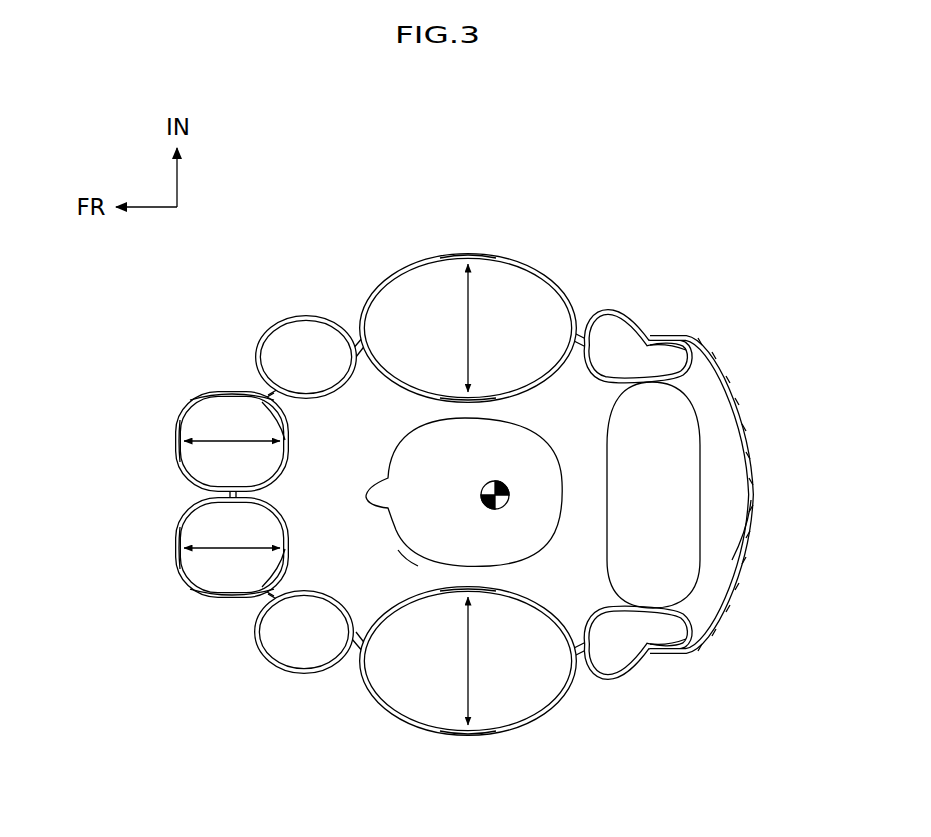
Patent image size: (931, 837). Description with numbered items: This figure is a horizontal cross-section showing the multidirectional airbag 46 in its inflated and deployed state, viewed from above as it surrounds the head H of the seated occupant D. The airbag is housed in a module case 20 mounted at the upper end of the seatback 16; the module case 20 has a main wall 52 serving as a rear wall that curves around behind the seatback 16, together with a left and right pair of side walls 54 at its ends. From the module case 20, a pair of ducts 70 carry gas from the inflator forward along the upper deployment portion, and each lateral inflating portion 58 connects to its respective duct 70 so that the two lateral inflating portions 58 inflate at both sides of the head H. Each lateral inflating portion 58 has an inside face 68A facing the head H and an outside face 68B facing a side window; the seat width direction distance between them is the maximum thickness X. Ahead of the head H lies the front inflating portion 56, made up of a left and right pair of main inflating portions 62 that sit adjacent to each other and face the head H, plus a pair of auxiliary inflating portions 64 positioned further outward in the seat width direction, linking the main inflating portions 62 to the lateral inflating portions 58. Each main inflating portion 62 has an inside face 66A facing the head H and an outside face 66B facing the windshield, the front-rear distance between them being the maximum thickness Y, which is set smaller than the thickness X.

The multidirectional airbag 46 is at (424, 241).
The lateral inflating portion 58 is at (548, 268).
The outside face of lateral inflating portion 68B is at (482, 258).
The inside face of lateral inflating portion 68A is at (480, 401).
The auxiliary inflating portion 64 is at (278, 322).
The duct 70 is at (612, 330).
The main inflating portion 62 is at (222, 406).
The inside face of main inflating portion 66A is at (290, 440).
The outside face of main inflating portion 66B is at (180, 441).
The front inflating portion 56 is at (260, 333).
The side wall 54 is at (658, 338).
The seatback 16 is at (680, 418).
The module case 20 is at (754, 481).
The main wall 52 is at (740, 579).
The maximum thickness of lateral inflating portion X is at (473, 328).
The maximum thickness of front inflating portion Y is at (232, 444).
The head H is at (410, 517).
The seated occupant D is at (413, 564).